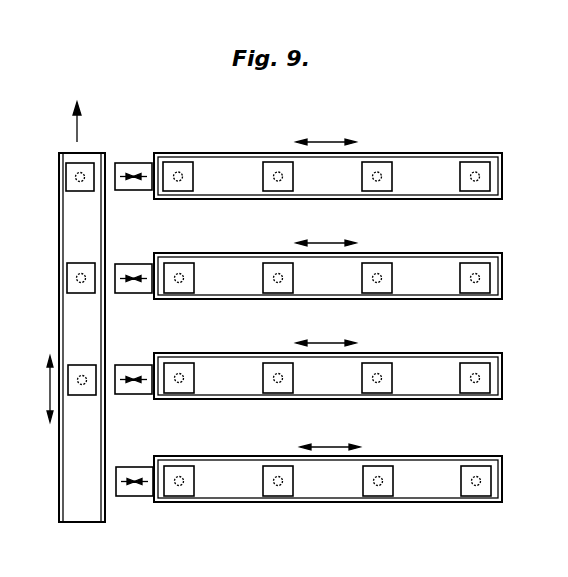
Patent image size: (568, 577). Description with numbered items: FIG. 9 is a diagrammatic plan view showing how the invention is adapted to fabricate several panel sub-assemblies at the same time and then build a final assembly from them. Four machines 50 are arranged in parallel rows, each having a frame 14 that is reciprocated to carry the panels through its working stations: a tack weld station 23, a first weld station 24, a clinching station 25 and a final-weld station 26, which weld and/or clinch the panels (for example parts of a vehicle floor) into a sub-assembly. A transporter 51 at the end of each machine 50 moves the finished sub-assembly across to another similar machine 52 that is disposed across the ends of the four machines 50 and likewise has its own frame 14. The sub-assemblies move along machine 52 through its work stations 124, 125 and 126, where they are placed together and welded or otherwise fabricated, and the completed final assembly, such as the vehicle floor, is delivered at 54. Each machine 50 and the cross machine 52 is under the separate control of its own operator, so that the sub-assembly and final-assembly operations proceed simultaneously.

The frame 14 is at (437, 199).
The tack weld station 23 is at (472, 170).
The first weld station 24 is at (374, 170).
The clinching station 25 is at (273, 170).
The final-weld station 26 is at (176, 170).
The machine 50 is at (502, 180).
The transporter 51 is at (136, 190).
The machine 52 is at (80, 522).
The delivery point 54 is at (80, 131).
The work station 124 is at (73, 366).
The work station 125 is at (68, 283).
The work station 126 is at (67, 177).